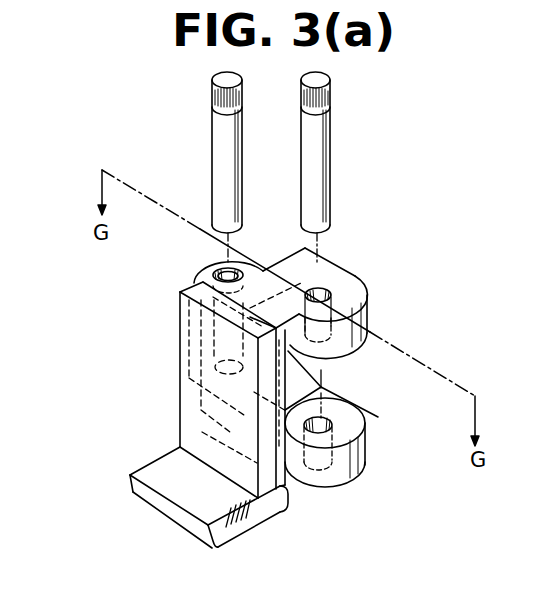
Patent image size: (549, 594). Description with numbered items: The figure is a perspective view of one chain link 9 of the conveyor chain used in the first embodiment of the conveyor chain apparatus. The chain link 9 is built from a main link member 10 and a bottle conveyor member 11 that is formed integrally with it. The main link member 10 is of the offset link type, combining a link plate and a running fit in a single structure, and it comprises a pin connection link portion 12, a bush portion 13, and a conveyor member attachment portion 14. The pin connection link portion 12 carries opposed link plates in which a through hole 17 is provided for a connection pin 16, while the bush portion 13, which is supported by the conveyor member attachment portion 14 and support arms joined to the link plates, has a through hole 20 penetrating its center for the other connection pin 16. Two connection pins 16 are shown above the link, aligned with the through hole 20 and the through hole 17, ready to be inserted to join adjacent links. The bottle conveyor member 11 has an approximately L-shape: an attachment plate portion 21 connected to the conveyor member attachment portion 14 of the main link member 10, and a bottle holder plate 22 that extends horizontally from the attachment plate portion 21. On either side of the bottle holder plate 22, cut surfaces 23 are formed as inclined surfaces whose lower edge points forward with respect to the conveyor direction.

The chain link 9 is at (380, 339).
The main link member 10 is at (334, 245).
The bottle conveyor member 11 is at (172, 365).
The pin connection link portion 12 is at (343, 415).
The bush portion 13 is at (207, 272).
The conveyor member attachment portion 14 is at (326, 386).
The connection pin 16 is at (318, 153).
The through hole 17 is at (348, 281).
The through hole 20 is at (214, 263).
The attachment plate portion 21 is at (187, 413).
The bottle holder plate 22 is at (180, 482).
The cut surface 23 is at (228, 527).